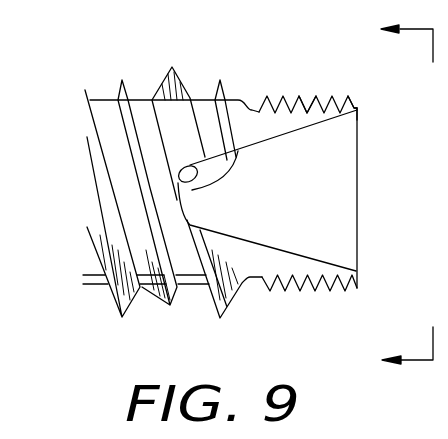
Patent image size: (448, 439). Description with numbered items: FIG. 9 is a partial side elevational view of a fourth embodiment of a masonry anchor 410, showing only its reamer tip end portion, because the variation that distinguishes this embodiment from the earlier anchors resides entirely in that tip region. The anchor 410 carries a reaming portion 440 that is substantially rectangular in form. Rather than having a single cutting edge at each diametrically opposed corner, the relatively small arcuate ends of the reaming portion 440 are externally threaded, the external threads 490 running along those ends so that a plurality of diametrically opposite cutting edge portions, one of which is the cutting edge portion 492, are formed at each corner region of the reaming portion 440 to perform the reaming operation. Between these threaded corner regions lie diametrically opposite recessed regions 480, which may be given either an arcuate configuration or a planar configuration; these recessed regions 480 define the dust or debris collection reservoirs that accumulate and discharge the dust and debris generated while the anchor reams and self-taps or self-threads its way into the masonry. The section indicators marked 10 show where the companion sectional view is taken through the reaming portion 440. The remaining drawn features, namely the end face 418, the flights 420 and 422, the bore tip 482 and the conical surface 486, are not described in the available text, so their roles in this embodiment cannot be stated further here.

The section line indicator 10 is at (392, 193).
The masonry anchor 410 is at (60, 141).
The end face 418 is at (357, 212).
The flight 420 is at (113, 316).
The flight 422 is at (172, 303).
The reaming portion 440 is at (357, 108).
The recessed region 480 is at (297, 206).
The bore tip 482 is at (178, 178).
The conical bore surface 486 is at (192, 190).
The external threads 490 is at (282, 96).
The cutting edge portion 492 is at (303, 113).